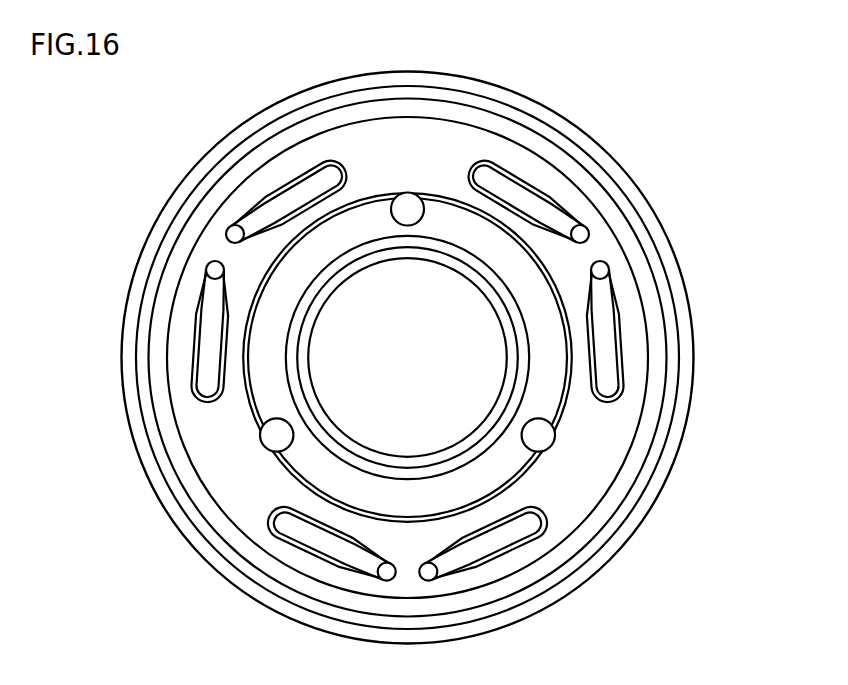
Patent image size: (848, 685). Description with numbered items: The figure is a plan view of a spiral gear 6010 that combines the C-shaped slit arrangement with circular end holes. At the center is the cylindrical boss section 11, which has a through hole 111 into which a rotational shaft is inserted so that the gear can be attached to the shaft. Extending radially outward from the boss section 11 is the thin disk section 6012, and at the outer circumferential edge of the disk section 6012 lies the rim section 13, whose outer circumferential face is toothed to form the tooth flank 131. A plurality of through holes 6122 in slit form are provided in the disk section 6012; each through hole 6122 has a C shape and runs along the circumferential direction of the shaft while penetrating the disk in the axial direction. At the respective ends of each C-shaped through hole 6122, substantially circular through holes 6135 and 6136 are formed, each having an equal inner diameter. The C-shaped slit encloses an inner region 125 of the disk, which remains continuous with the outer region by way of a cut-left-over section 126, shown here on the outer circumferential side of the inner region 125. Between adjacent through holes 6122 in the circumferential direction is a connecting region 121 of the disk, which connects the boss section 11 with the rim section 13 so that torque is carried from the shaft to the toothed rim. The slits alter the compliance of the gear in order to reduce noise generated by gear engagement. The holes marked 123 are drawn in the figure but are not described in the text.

The spiral gear 6010 is at (667, 81).
The tooth flank 131 is at (688, 424).
The rim section 13 is at (657, 457).
The disk section 6012 is at (604, 470).
The boss section 11 is at (513, 458).
The through hole 111 is at (310, 347).
The positioning hole 123 is at (268, 424).
The connecting region 121 is at (237, 470).
The through hole 6122 is at (551, 206).
The inner region 125 is at (572, 229).
The cut-left-over section 126 is at (590, 249).
The through hole 6135 is at (227, 229).
The through hole 6136 is at (208, 265).